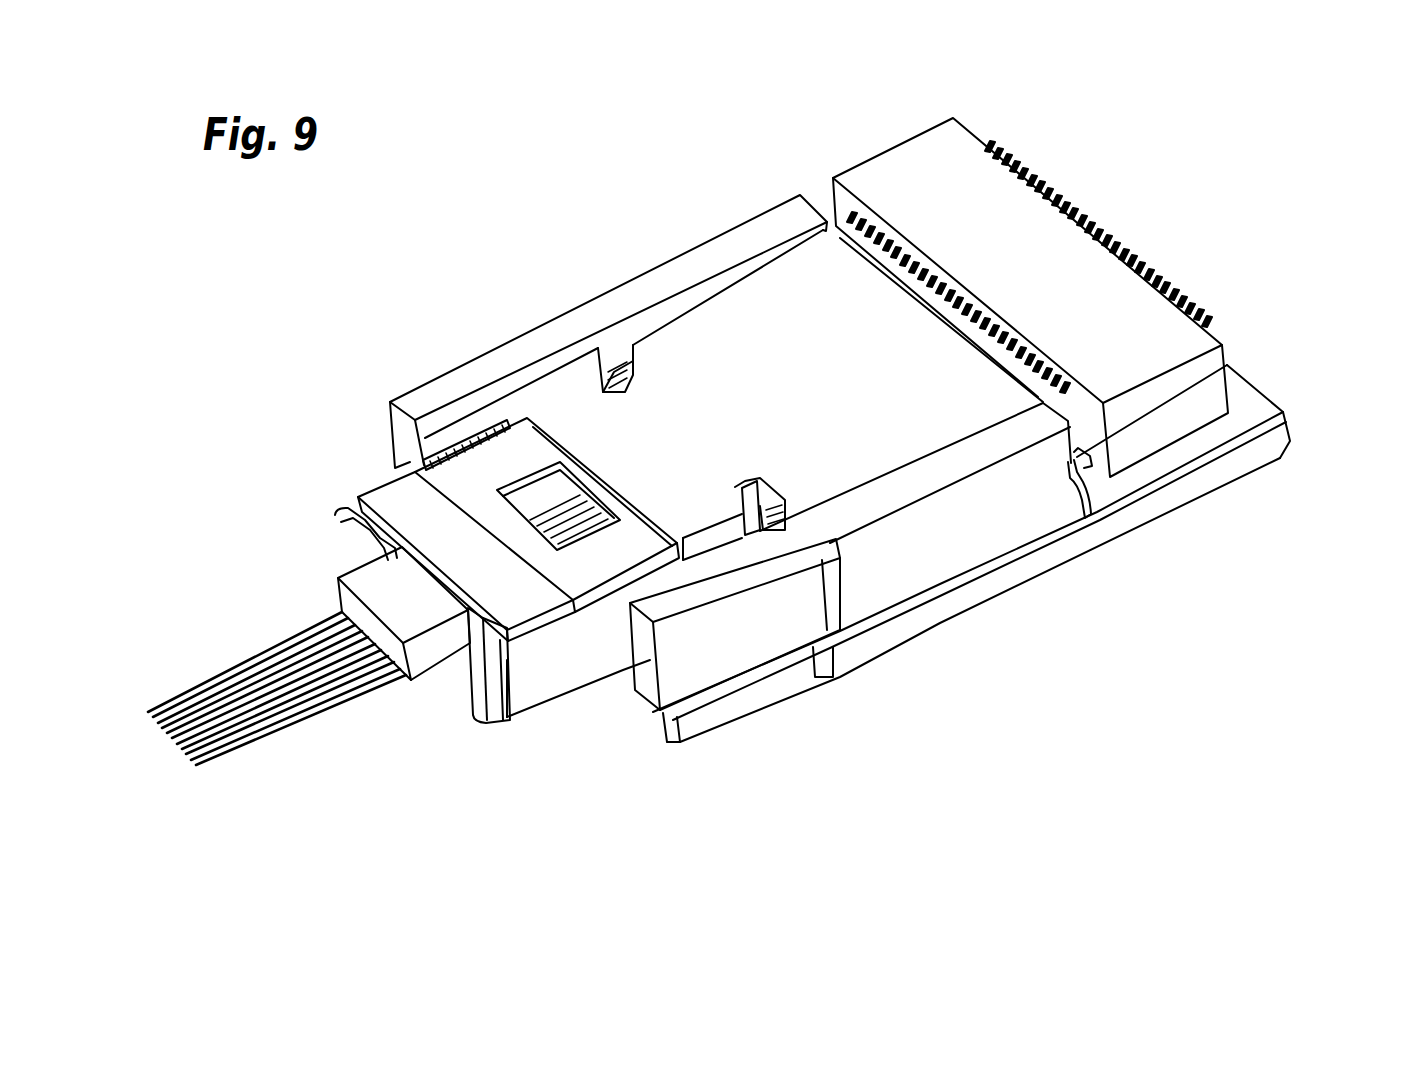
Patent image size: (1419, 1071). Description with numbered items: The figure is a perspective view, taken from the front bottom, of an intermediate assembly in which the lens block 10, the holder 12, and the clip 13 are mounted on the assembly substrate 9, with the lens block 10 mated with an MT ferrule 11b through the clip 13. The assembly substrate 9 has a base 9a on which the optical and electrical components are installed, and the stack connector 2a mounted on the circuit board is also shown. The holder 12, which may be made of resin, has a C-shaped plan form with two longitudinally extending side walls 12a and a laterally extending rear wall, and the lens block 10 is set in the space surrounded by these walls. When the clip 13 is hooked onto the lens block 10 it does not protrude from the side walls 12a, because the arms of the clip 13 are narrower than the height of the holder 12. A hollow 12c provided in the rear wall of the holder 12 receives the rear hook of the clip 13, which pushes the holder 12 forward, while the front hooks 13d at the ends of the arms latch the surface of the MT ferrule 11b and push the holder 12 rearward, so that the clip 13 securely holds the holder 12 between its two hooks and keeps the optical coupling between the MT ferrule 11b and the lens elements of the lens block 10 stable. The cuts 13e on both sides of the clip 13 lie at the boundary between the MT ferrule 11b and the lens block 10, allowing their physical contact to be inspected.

The assembly substrate 9 is at (1298, 421).
The base 9a is at (1243, 467).
The stack connector 2a is at (915, 157).
The lens block 10 is at (787, 527).
The MT ferrule 11b is at (397, 497).
The holder 12 is at (490, 355).
The side walls 12a is at (640, 288).
The hollow 12c is at (1083, 490).
The clip 13 is at (763, 285).
The hooks 13d is at (350, 550).
The cuts 13e is at (567, 350).